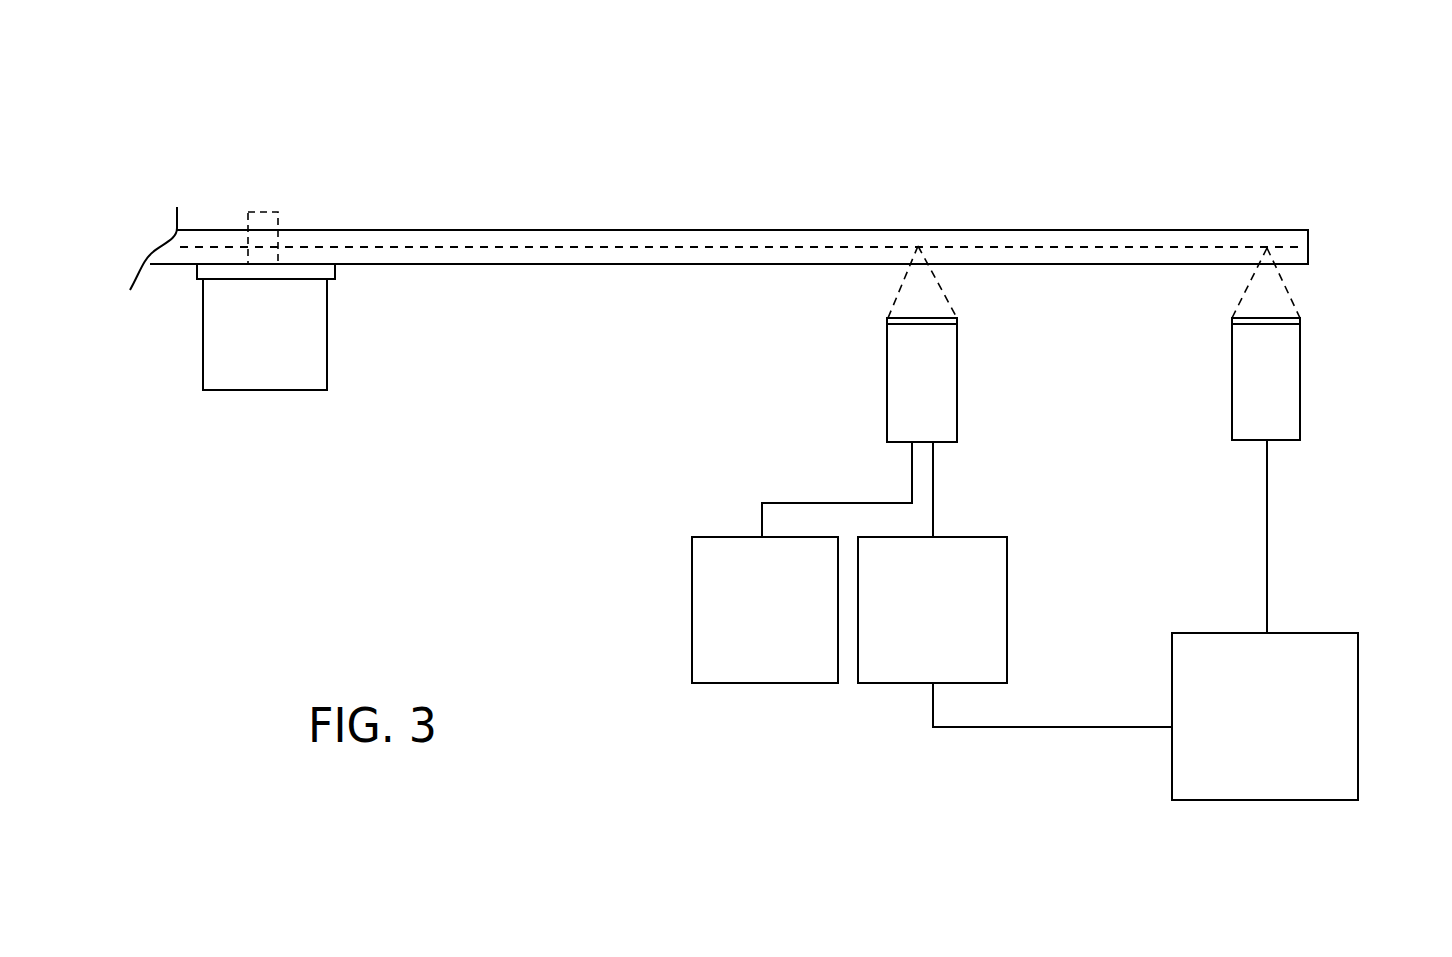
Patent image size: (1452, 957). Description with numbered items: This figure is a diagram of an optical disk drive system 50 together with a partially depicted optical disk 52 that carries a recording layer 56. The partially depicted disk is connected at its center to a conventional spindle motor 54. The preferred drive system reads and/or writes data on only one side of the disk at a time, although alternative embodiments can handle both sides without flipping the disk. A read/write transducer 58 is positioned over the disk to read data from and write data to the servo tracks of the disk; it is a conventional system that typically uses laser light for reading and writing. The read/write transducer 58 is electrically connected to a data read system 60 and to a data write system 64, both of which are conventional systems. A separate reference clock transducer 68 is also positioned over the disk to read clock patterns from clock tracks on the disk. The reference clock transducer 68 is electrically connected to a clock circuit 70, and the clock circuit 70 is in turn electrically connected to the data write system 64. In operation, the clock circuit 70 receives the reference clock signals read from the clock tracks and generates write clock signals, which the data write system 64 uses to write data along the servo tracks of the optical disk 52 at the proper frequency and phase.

The optical disk drive system 50 is at (897, 108).
The optical disk 52 is at (451, 230).
The spindle motor 54 is at (327, 340).
The recording layer 56 is at (563, 247).
The read/write transducer 58 is at (887, 398).
The data read system 60 is at (692, 582).
The data write system 64 is at (1007, 573).
The reference clock transducer 68 is at (1300, 357).
The clock circuit 70 is at (1233, 800).